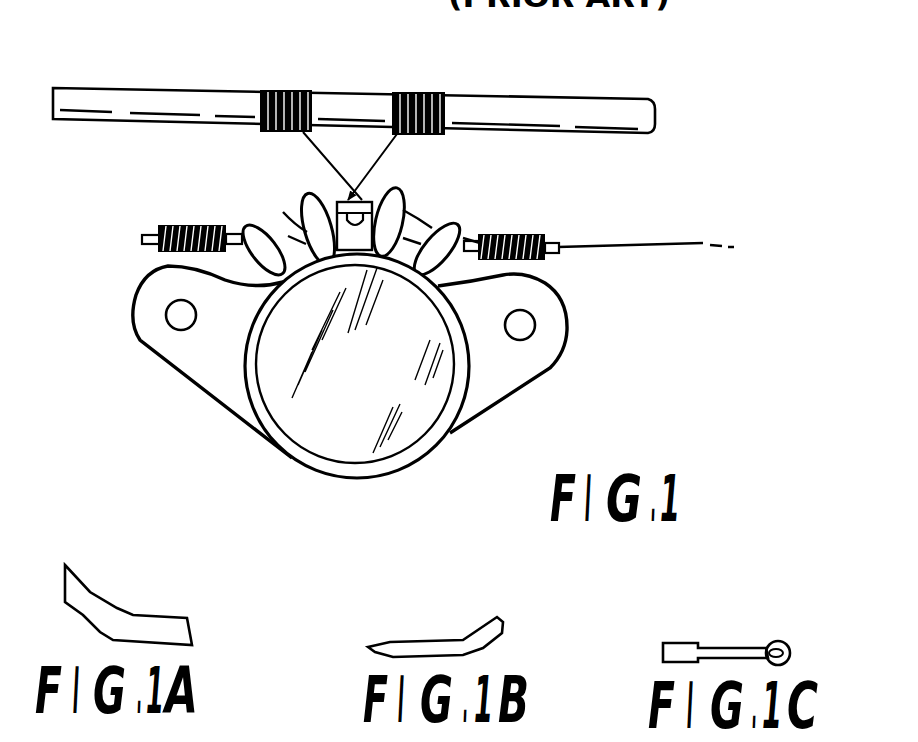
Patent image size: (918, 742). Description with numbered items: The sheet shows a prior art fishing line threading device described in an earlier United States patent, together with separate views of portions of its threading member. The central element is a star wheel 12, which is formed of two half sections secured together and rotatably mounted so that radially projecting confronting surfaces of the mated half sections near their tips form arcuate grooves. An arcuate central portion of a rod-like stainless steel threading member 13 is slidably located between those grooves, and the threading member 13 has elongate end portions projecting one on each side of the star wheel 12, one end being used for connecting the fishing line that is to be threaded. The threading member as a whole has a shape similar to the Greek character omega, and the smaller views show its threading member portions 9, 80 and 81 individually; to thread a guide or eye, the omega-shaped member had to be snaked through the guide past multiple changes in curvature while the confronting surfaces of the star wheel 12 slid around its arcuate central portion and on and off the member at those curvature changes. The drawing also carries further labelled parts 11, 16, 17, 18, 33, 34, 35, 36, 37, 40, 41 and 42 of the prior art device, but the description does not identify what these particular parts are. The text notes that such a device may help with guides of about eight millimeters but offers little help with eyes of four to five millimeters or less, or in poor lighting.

In FIG. 1A, the threading member portion 9 is at (139, 621).
In FIG. 1, the disc 11 is at (290, 460).
In FIG. 1, the star wheel 12 is at (459, 221).
In FIG. 1, the threading member 13 is at (284, 211).
In FIG. 1, the disc face 16 is at (414, 425).
In FIG. 1, the left mounting wing 17 is at (199, 362).
In FIG. 1, the right mounting wing 18 is at (514, 364).
In FIG. 1, the finger 33 is at (424, 228).
In FIG. 1, the left spring 34 is at (234, 232).
In FIG. 1, the right spring 35 is at (483, 233).
In FIG. 1, the left spring rod 36 is at (158, 227).
In FIG. 1, the right spring rod 37 is at (532, 238).
In FIG. 1, the wire 40 is at (644, 241).
In FIG. 1, the hub clamp 41 is at (327, 178).
In FIG. 1, the rod with coils 42 is at (362, 103).
In FIG. 1B, the threading member portion 80 is at (393, 640).
In FIG. 1C, the threading member portion 81 is at (781, 637).